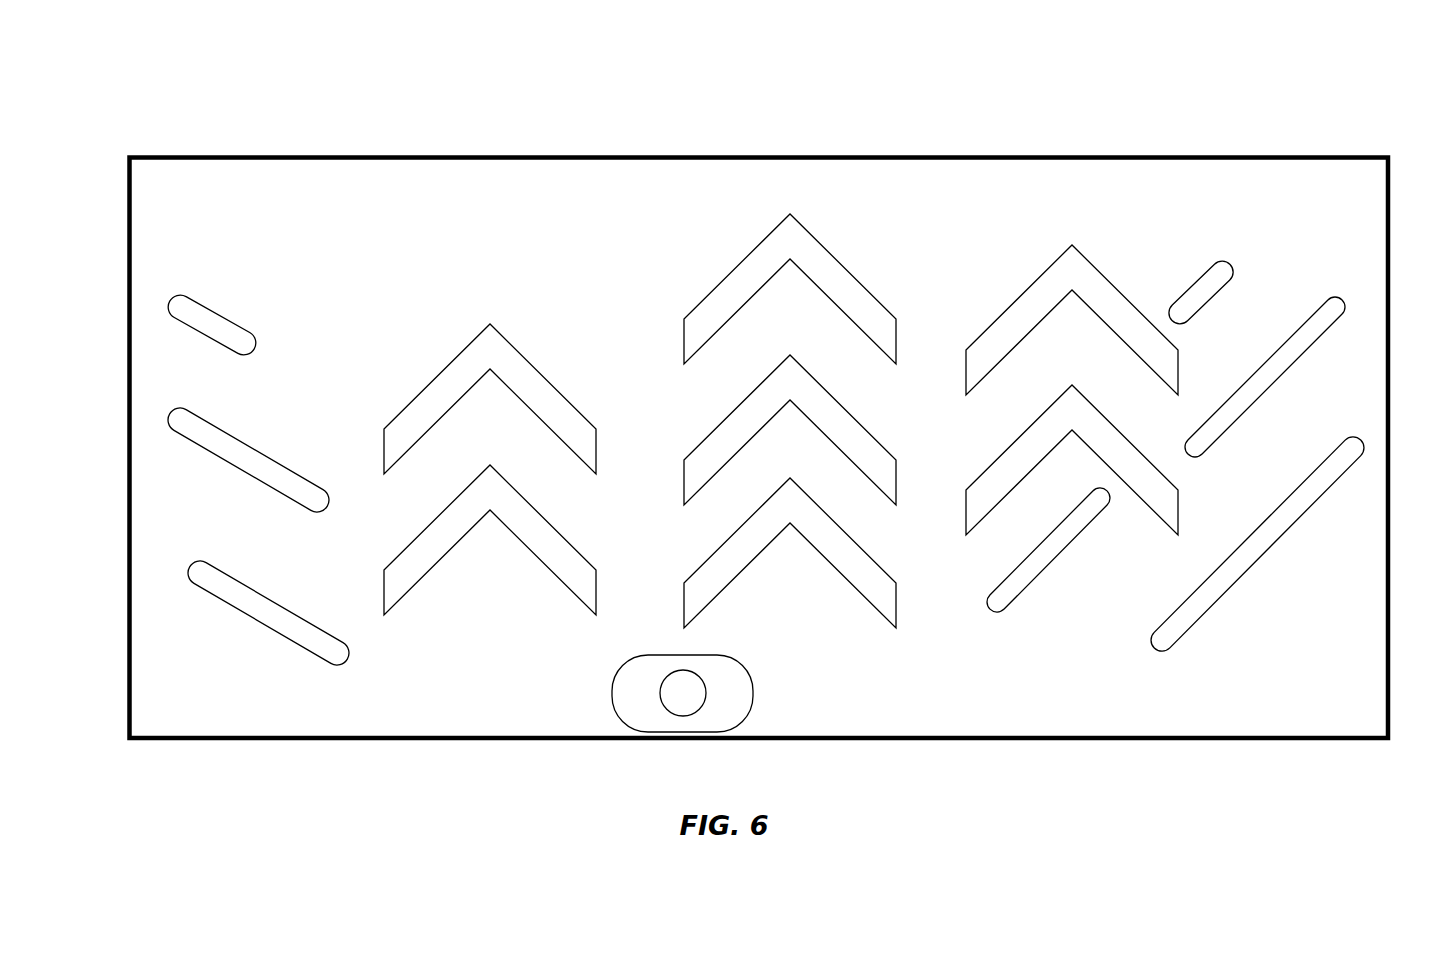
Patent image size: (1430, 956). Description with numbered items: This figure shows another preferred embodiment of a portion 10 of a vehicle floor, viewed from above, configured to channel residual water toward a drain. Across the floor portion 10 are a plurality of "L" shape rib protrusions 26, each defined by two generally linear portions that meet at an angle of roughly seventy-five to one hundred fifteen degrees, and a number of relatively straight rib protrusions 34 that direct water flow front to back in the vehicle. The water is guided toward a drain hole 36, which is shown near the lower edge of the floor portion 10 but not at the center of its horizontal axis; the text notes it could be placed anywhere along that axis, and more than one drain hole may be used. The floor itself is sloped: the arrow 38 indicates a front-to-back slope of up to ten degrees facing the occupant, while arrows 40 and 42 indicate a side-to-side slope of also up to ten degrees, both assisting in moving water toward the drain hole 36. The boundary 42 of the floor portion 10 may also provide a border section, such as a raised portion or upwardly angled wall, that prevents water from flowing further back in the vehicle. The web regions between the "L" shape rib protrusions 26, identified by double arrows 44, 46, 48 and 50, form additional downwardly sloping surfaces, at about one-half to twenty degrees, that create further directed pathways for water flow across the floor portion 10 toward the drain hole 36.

The portion of the vehicle floor 10 is at (463, 118).
The "L" shape rib protrusions 26 is at (797, 190).
The straight rib protrusions 34 is at (1182, 262).
The drain hole 36 is at (593, 685).
The arrow 38 is at (1415, 159).
The arrow 40 is at (131, 776).
The arrow 42 is at (1396, 776).
The double arrow 44 is at (490, 415).
The double arrow 46 is at (790, 308).
The double arrow 48 is at (790, 448).
The double arrow 50 is at (1072, 335).